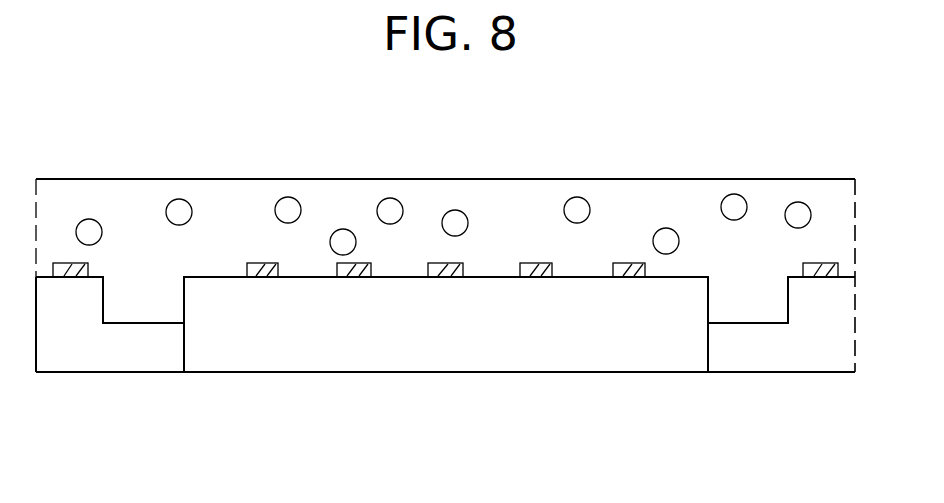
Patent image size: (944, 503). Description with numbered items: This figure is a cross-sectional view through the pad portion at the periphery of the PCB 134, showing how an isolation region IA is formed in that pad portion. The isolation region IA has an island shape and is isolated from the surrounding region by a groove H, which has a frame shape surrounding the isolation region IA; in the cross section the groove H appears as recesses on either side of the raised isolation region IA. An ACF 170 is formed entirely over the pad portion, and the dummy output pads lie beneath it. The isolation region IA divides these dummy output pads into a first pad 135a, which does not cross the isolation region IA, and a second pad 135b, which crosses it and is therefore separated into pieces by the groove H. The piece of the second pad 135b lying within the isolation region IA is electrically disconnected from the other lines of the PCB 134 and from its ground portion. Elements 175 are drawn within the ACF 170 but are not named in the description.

The PCB 134 is at (822, 370).
The first pad 135a is at (821, 262).
The second pad 135b is at (540, 262).
The ACF 170 is at (445, 192).
The spacer beads 175 is at (387, 207).
The groove H is at (137, 288).
The isolation region IA is at (708, 372).